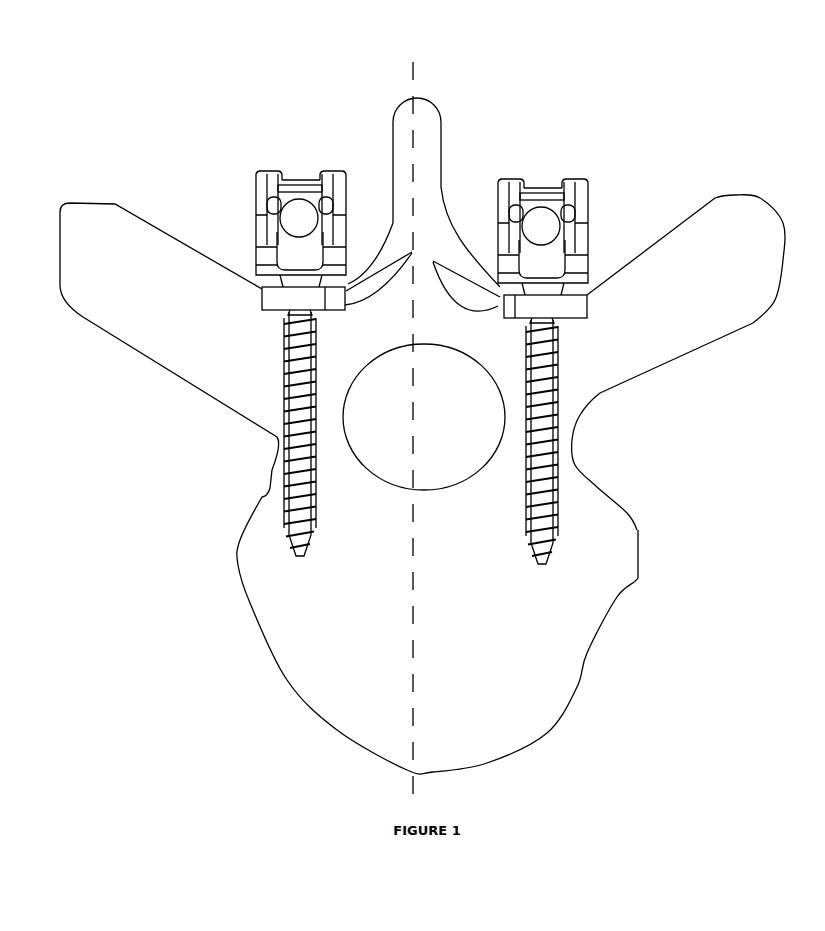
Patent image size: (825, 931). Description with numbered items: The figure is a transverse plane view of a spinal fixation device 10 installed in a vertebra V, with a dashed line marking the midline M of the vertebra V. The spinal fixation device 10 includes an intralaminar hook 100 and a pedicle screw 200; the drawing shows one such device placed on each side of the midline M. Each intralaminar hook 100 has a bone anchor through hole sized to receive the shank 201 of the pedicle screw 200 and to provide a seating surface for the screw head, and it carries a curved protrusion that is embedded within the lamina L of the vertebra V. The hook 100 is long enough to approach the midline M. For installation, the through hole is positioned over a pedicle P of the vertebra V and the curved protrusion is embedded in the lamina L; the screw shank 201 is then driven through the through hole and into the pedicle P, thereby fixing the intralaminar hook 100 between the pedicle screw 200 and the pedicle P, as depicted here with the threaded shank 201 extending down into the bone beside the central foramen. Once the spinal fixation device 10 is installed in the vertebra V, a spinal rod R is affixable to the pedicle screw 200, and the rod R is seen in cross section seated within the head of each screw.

The spinal fixation device 10 is at (436, 334).
The pedicle screw 200 is at (582, 215).
The intralaminar hook 100 is at (578, 263).
The shank 201 is at (580, 442).
The spinal rod R is at (293, 224).
The lamina L is at (393, 251).
The midline M is at (413, 417).
The pedicle P is at (682, 357).
The vertebra V is at (590, 664).